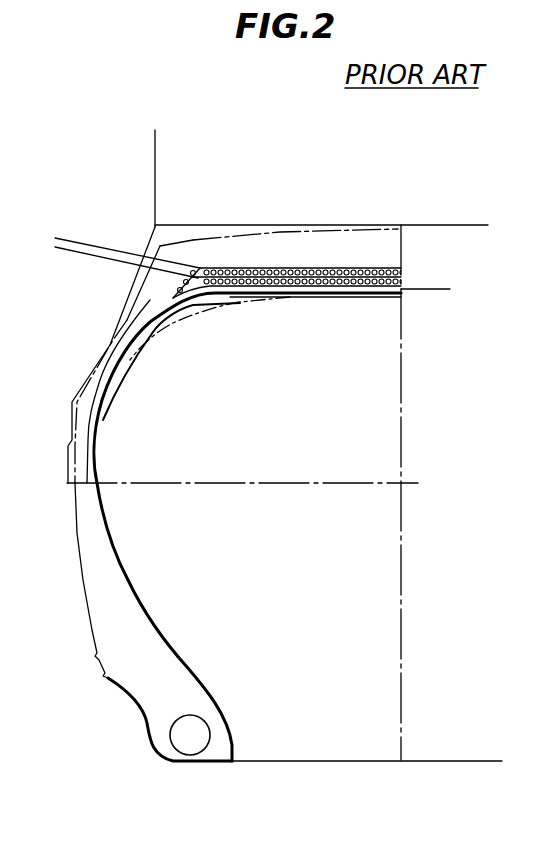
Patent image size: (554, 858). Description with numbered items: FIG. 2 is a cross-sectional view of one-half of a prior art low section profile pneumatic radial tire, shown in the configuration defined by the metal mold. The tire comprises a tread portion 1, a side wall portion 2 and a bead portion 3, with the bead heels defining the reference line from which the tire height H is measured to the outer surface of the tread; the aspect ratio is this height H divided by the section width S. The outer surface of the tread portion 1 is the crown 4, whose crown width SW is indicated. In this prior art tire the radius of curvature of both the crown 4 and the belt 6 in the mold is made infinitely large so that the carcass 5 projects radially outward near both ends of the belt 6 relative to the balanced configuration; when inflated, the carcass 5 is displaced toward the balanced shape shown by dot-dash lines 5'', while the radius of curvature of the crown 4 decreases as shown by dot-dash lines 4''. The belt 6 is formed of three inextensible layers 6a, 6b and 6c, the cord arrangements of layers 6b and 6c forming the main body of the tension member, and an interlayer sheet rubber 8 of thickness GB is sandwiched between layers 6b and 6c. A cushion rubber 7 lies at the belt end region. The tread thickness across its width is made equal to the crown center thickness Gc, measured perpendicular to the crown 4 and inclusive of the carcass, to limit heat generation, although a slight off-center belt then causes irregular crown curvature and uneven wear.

The tread portion 1 is at (317, 232).
The side wall portion 2 is at (80, 477).
The bead portion 3 is at (160, 738).
The crown 4 is at (168, 334).
The deformed crown 4'' is at (236, 432).
The carcass 5 is at (247, 527).
The displaced carcass 5'' is at (210, 328).
The belt 6 is at (305, 268).
The inextensible layer 6a is at (337, 268).
The inextensible layer 6b is at (358, 268).
The inextensible layer 6c is at (366, 268).
The cushion rubber 7 is at (187, 295).
The interlayer sheet rubber 8 is at (223, 294).
The sheet rubber thickness GB is at (78, 262).
The crown center thickness Gc is at (435, 197).
The crown width SW is at (432, 142).
The section width S is at (58, 543).
The tire height H is at (478, 760).